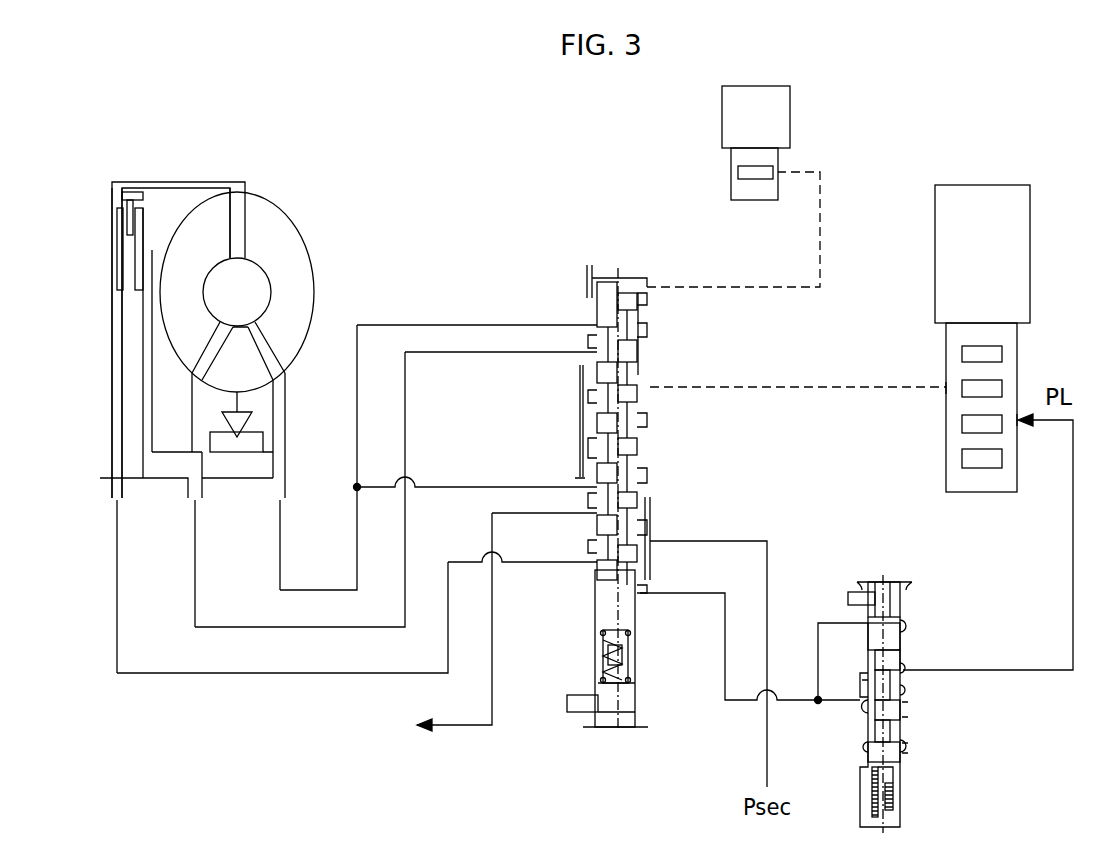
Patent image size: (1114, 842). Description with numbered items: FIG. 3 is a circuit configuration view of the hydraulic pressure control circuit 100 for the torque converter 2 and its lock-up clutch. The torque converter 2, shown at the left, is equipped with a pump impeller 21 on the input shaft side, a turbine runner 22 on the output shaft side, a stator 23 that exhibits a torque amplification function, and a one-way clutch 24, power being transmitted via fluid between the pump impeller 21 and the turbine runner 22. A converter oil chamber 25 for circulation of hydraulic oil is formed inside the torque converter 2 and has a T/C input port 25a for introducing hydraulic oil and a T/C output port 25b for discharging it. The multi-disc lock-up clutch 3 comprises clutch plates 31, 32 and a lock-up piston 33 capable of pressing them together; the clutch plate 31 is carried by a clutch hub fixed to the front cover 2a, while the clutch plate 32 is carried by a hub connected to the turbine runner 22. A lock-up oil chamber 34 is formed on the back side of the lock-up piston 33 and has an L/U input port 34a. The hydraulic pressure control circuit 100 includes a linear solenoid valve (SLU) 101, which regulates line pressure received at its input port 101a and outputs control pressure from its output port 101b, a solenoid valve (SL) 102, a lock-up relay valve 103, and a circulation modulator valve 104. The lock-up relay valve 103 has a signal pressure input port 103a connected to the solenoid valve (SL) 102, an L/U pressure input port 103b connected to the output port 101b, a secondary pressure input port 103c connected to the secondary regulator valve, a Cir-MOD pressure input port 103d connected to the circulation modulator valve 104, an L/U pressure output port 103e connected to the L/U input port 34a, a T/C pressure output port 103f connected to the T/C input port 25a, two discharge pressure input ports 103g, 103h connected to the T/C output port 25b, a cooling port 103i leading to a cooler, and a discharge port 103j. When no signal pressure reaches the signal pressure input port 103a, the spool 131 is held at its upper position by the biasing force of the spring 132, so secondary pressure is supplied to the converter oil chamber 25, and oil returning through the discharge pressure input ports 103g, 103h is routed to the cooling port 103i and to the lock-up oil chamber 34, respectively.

The torque converter 2 is at (287, 170).
The front cover 2a is at (112, 380).
The multi-disc lock-up clutch 3 is at (150, 205).
The pump impeller 21 is at (290, 228).
The turbine runner 22 is at (222, 205).
The stator 23 is at (245, 355).
The one-way clutch 24 is at (245, 420).
The converter oil chamber 25 is at (175, 200).
The T/C input port 25a is at (112, 490).
The T/C output port 25b is at (285, 490).
The clutch plate 31 is at (112, 197).
The clutch plate 32 is at (137, 262).
The lock-up piston 33 is at (143, 340).
The lock-up oil chamber 34 is at (165, 470).
The L/U input port 34a is at (205, 490).
The hydraulic pressure control circuit 100 is at (587, 222).
The linear solenoid valve (SLU) 101 is at (987, 180).
The input port 101a is at (1018, 425).
The output port 101b is at (946, 392).
The solenoid valve (SL) 102 is at (795, 130).
The lock-up relay valve 103 is at (575, 275).
The signal pressure input port 103a is at (650, 278).
The L/U pressure input port 103b is at (650, 372).
The secondary pressure input port 103c is at (652, 535).
The Cir-MOD pressure input port 103d is at (640, 600).
The L/U pressure output port 103e is at (590, 355).
The T/C pressure output port 103f is at (590, 570).
The discharge pressure input port 103g is at (590, 468).
The discharge pressure input port 103h is at (590, 320).
The cooling port 103i is at (590, 518).
The discharge port 103j is at (650, 440).
The circulation modulator valve (Cir-MOD valve) 104 is at (915, 620).
The spool 131 is at (625, 628).
The spring 132 is at (595, 665).